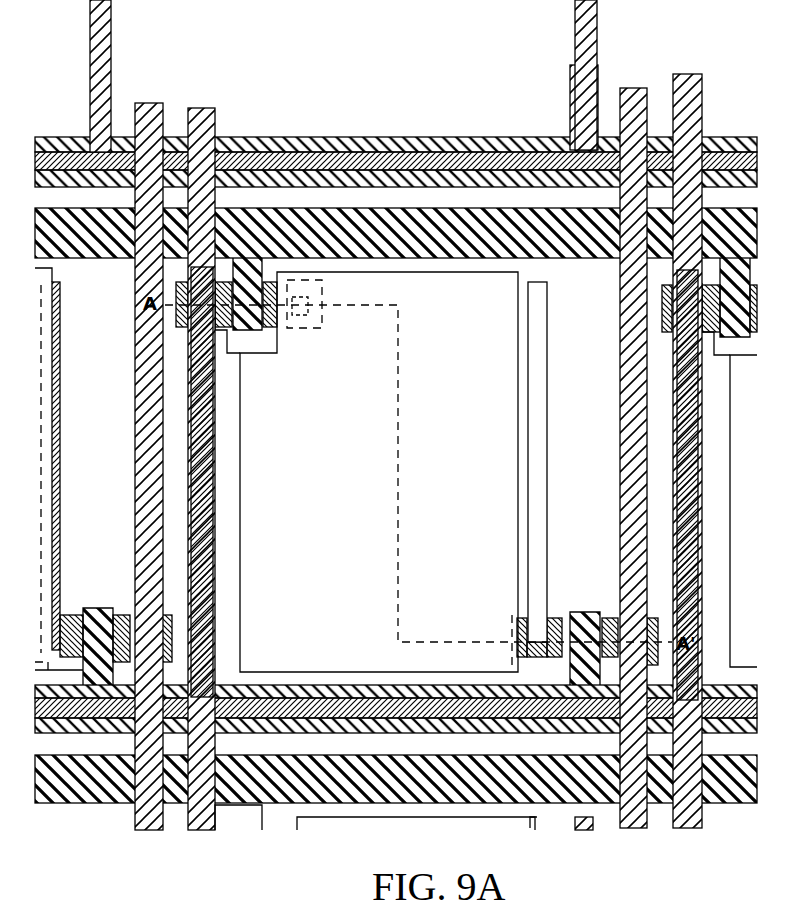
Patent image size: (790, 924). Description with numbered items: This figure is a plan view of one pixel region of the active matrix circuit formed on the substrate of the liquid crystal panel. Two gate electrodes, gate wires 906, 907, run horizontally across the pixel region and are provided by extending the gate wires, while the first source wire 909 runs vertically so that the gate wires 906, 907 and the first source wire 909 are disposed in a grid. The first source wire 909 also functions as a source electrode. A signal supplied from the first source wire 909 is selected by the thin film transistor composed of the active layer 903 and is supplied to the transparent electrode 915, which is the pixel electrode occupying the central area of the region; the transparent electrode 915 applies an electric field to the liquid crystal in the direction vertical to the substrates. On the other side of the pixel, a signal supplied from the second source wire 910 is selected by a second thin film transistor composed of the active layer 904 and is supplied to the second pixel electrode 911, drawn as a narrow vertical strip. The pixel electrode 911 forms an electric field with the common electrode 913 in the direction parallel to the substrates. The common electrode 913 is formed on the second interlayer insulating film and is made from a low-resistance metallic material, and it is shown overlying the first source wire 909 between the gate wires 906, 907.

The active layer 903 is at (228, 330).
The active layer 904 is at (545, 633).
The gate electrode 906 is at (460, 258).
The gate electrode 907 is at (248, 686).
The first source wire 909 is at (225, 216).
The second source wire 910 is at (628, 395).
The second pixel electrode 911 is at (530, 480).
The common electrode 913 is at (205, 497).
The transparent electrode 915 is at (432, 345).